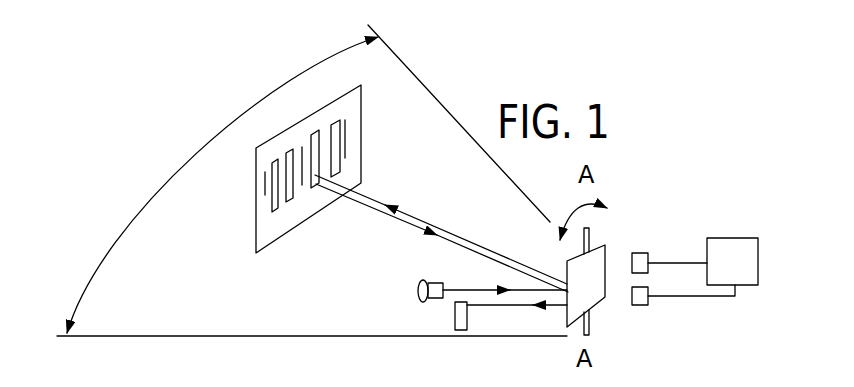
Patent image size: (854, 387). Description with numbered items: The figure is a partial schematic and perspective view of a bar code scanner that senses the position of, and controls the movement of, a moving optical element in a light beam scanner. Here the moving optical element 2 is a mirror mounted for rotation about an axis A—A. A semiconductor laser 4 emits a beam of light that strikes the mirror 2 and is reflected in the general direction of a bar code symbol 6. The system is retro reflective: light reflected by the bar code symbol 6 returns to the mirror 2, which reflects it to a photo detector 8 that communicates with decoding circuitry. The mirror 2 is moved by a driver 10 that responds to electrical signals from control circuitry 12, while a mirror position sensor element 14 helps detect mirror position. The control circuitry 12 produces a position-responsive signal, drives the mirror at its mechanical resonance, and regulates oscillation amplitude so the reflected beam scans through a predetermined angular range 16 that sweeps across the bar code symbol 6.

The moving optical element 2 is at (602, 297).
The semiconductor laser 4 is at (418, 288).
The bar code symbol 6 is at (362, 135).
The photo detector 8 is at (461, 331).
The driver 10 is at (640, 253).
The control circuitry 12 is at (750, 273).
The mirror position sensor element 14 is at (640, 305).
The predetermined angular range 16 is at (223, 128).